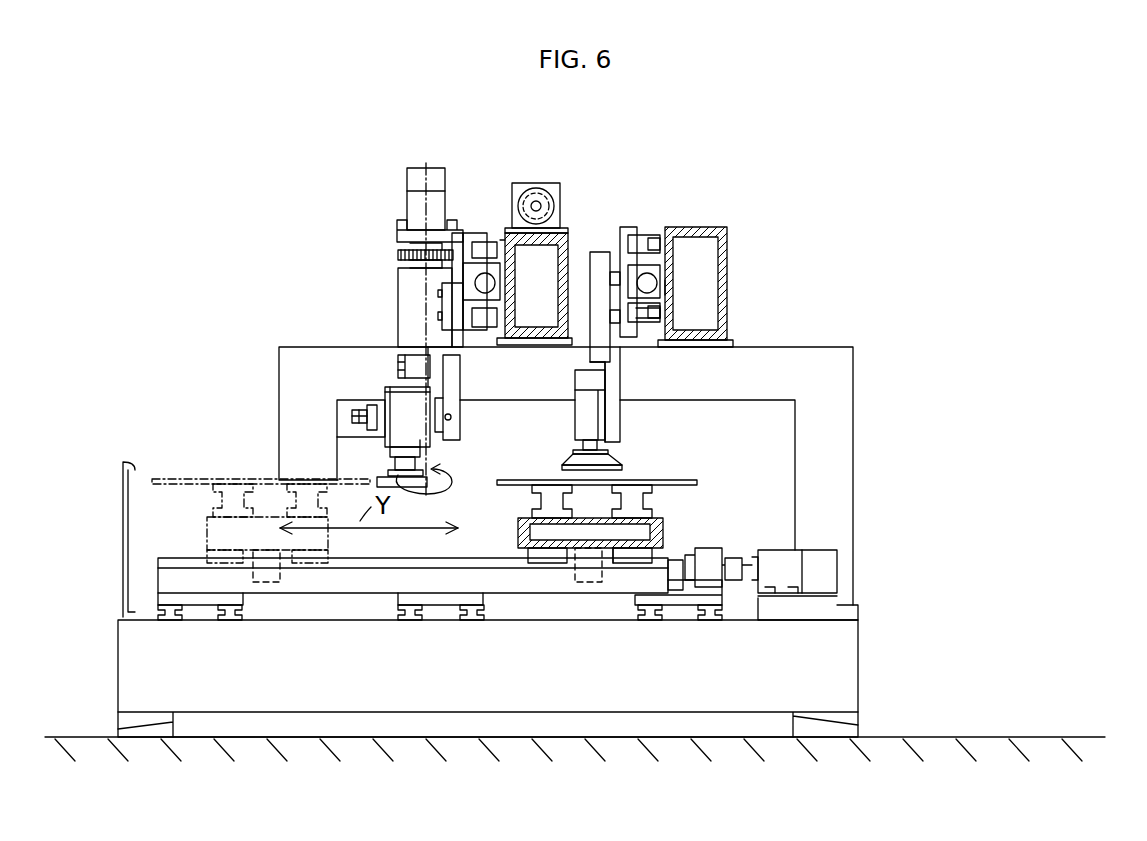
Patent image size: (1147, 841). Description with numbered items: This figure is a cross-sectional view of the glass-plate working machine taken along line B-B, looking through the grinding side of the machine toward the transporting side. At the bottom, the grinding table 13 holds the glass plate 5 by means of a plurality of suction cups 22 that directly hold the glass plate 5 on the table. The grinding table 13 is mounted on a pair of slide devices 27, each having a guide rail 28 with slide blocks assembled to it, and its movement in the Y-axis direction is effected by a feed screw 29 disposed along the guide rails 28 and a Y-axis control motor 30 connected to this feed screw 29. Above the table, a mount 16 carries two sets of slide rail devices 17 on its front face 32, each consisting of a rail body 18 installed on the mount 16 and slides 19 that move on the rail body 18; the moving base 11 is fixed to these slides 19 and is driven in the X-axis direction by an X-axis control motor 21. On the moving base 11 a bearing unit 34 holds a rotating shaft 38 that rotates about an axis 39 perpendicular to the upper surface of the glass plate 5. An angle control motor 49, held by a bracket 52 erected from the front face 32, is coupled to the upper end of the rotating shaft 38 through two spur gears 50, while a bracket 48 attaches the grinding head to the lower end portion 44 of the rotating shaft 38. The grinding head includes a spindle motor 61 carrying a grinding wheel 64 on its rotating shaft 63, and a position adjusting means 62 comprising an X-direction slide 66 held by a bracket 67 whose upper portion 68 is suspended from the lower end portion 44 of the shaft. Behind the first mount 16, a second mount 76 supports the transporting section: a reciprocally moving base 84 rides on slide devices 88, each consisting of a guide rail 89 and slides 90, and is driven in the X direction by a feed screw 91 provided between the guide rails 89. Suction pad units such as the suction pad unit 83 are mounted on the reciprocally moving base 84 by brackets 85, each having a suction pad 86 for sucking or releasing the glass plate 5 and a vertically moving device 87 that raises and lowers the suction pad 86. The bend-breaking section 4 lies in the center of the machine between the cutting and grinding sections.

The bend-breaking section 4 is at (444, 625).
The glass plate 5 is at (662, 480).
The moving base 11 is at (460, 235).
The grinding table 13 is at (588, 520).
The mount 16 is at (567, 237).
The slide rail devices 17 is at (490, 257).
The rail body 18 is at (503, 225).
The slides 19 is at (472, 233).
The X-axis control motor 21 is at (535, 187).
The suction cups 22 is at (632, 498).
The slide devices 27 is at (630, 570).
The guide rail 28 is at (507, 572).
The feed screw 29 is at (676, 580).
The Y-axis control motor 30 is at (820, 550).
The front face 32 is at (442, 305).
The bearing unit 34 is at (405, 330).
The rotating shaft 38 is at (422, 276).
The axis 39 is at (445, 455).
The lower end portion 44 is at (322, 353).
The bracket 48 is at (398, 366).
The angle control motor 49 is at (410, 180).
The spur gears 50 is at (405, 252).
The bracket 52 is at (455, 230).
The spindle motor 61 is at (400, 428).
The position adjusting means 62 is at (345, 415).
The rotating shaft 63 is at (392, 467).
The grinding wheel 64 is at (438, 488).
The X-direction slide 66 is at (452, 418).
The bracket 67 is at (456, 396).
The upper portion 68 is at (430, 366).
The second mount 76 is at (725, 232).
The suction pad unit 83 is at (578, 440).
The reciprocally moving base 84 is at (625, 290).
The brackets 85 is at (605, 350).
The suction pad 86 is at (583, 458).
The vertically moving device 87 is at (588, 400).
The slide devices 88 is at (648, 318).
The guide rails 89 is at (655, 242).
The slides 90 is at (628, 267).
The feed screw 91 is at (668, 289).